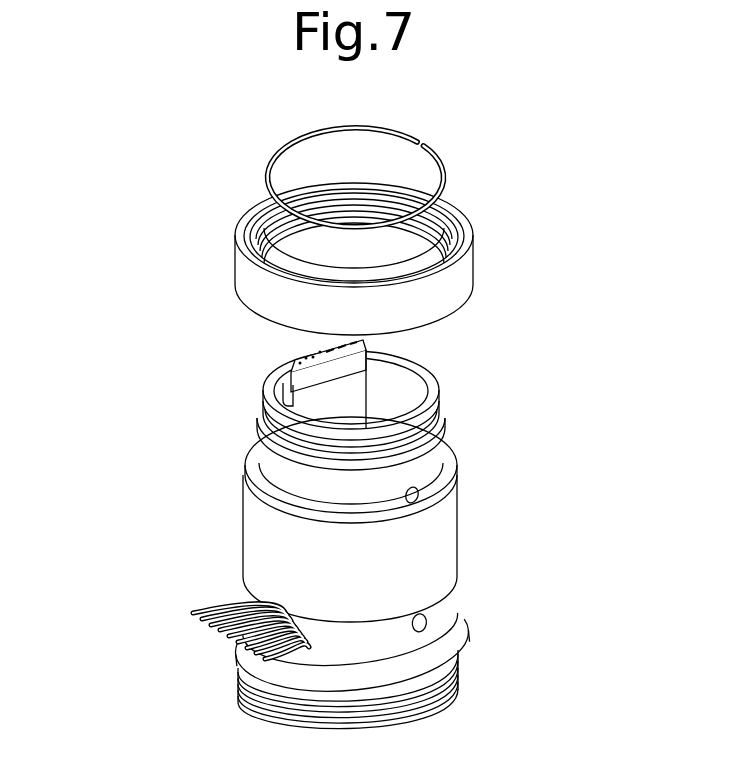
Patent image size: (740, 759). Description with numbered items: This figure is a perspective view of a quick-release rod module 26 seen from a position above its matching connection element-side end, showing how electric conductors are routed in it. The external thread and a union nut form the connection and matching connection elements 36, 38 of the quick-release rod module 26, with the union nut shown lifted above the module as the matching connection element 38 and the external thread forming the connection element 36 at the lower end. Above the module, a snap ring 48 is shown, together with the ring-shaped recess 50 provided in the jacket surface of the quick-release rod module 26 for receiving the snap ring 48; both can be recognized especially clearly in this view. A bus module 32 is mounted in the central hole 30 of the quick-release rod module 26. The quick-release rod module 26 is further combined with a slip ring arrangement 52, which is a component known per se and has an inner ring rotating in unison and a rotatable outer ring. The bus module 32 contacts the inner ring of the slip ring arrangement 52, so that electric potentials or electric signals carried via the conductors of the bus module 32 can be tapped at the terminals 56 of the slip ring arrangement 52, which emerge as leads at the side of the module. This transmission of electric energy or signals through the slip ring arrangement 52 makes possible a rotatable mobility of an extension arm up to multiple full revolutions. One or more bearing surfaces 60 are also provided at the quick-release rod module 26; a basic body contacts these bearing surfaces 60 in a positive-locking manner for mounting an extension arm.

The quick-release rod module 26 is at (192, 230).
The snap ring 48 is at (452, 170).
The matching connection element 38 is at (443, 298).
The bus module 32 is at (333, 409).
The central hole 30 is at (390, 387).
The ring-shaped recess 50 is at (443, 418).
The bearing surfaces 60 is at (392, 482).
The slip ring arrangement 52 is at (412, 560).
The terminals 56 is at (188, 608).
The connection element 36 is at (238, 678).